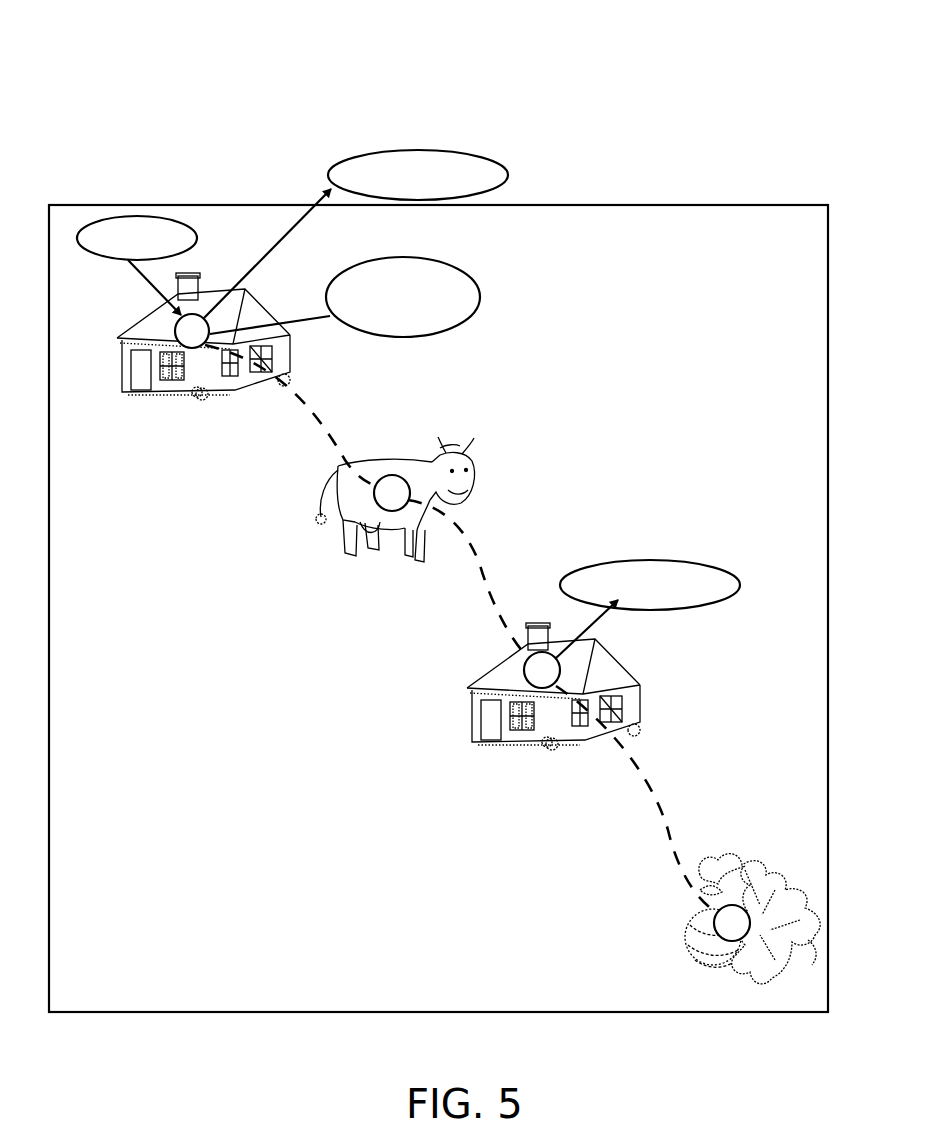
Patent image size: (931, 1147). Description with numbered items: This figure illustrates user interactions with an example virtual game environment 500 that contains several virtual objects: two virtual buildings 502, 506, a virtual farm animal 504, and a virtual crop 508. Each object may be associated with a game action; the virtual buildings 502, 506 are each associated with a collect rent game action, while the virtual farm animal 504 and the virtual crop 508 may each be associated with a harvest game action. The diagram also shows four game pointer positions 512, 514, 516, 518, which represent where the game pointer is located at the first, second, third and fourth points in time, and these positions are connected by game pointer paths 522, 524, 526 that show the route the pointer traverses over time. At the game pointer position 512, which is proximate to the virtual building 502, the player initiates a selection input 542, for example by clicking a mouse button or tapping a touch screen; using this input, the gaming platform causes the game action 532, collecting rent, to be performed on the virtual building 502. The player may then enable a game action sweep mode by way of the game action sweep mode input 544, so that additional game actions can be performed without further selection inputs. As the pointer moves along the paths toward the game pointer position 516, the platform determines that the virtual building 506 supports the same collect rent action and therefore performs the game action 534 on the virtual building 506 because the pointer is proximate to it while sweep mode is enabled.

The virtual game environment 500 is at (618, 56).
The virtual building 502 is at (152, 393).
The virtual farm animal 504 is at (340, 547).
The virtual building 506 is at (470, 715).
The virtual crop 508 is at (698, 915).
The game pointer position 512 is at (195, 348).
The game pointer position 514 is at (400, 510).
The game pointer position 516 is at (548, 688).
The game pointer position 518 is at (738, 905).
The game pointer path 522 is at (313, 423).
The game pointer path 524 is at (482, 563).
The game pointer path 526 is at (668, 823).
The game action 532 is at (500, 187).
The game action 534 is at (725, 602).
The selection input 542 is at (145, 215).
The game action sweep mode input 544 is at (390, 258).